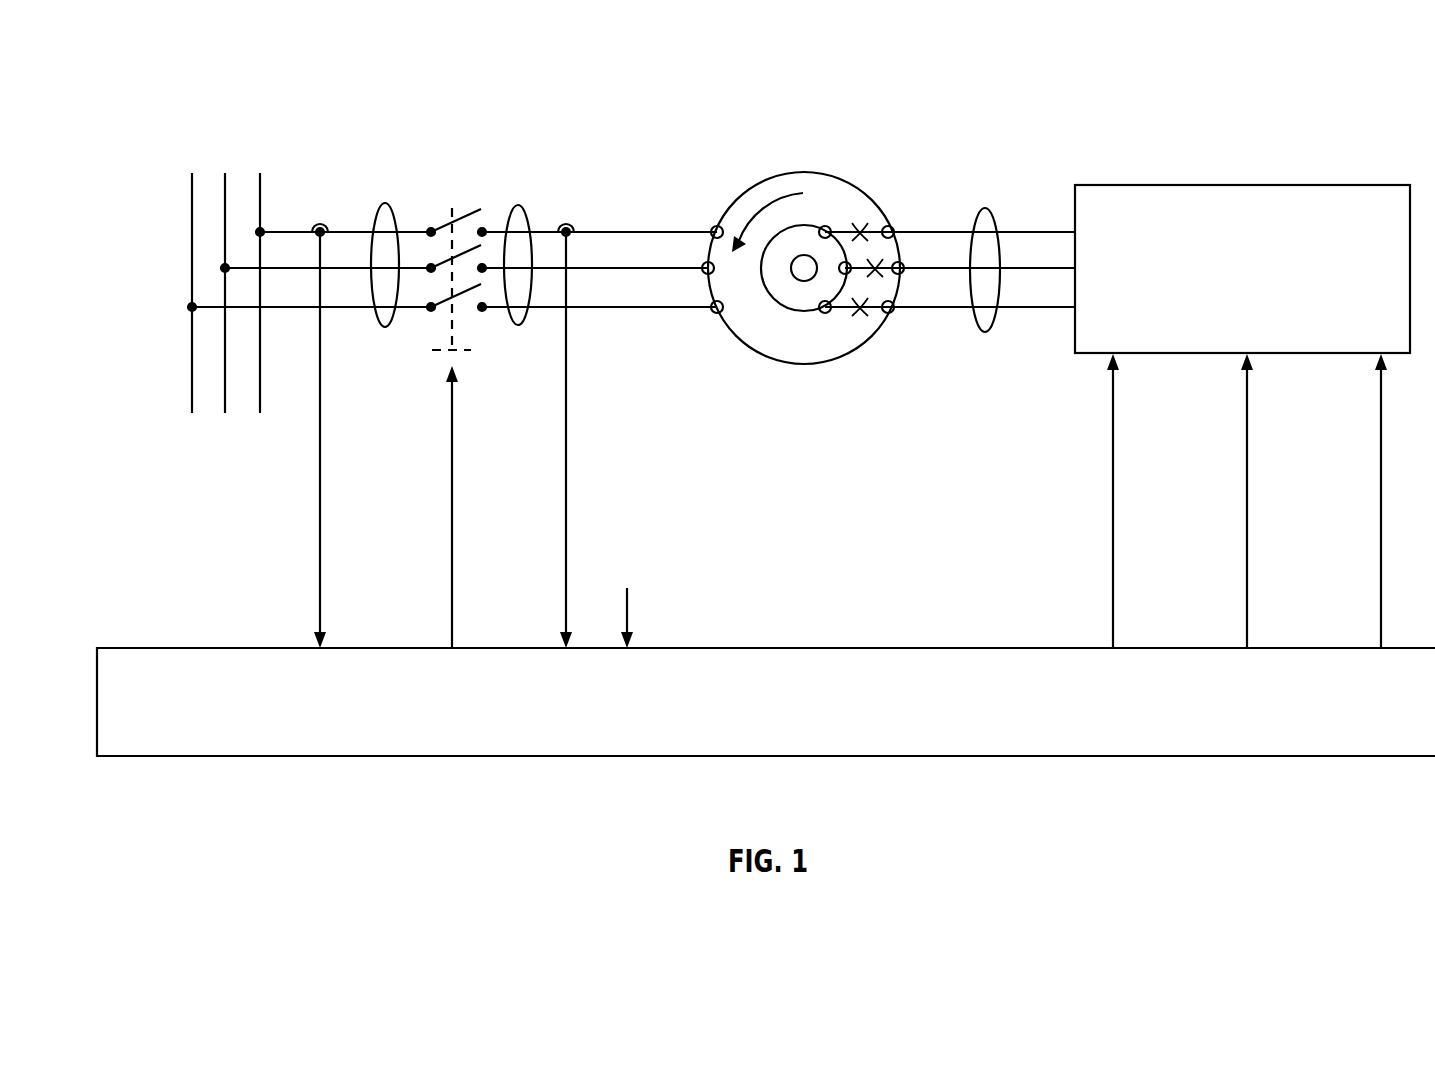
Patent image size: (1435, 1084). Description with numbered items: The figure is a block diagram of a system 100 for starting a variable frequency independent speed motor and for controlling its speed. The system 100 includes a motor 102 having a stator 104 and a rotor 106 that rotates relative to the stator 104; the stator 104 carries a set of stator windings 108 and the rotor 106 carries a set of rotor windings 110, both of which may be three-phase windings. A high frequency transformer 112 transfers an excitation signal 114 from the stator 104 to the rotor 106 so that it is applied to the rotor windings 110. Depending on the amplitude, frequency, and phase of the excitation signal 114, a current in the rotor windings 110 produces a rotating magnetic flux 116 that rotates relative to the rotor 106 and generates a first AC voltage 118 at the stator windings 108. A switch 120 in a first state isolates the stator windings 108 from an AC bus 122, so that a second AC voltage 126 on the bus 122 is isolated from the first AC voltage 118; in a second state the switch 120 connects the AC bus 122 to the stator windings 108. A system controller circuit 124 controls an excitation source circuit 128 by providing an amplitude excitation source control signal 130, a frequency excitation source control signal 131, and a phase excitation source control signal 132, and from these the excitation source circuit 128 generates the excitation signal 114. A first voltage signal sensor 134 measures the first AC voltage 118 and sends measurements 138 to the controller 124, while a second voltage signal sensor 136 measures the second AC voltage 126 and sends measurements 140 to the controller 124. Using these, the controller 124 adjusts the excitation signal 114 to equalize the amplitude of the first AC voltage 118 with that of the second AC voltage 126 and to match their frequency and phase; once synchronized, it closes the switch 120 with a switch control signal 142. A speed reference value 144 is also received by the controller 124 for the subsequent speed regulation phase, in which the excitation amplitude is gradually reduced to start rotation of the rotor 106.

The system 100 is at (222, 54).
The motor 102 is at (907, 102).
The stator 104 is at (726, 206).
The rotor 106 is at (810, 226).
The set of stator windings 108 is at (714, 237).
The set of rotor windings 110 is at (822, 233).
The high frequency transformer 112 is at (873, 317).
The excitation signal 114 is at (985, 210).
The rotating magnetic flux 116 is at (778, 196).
The first AC voltage 118 is at (518, 206).
The switch 120 is at (430, 230).
The AC bus 122 is at (192, 200).
The system controller circuit 124 is at (163, 647).
The second AC voltage 126 is at (385, 203).
The excitation source circuit 128 is at (1278, 185).
The amplitude excitation source control signal 130 is at (1111, 512).
The frequency excitation source control signal 131 is at (1245, 512).
The phase excitation source control signal 132 is at (1379, 512).
The first voltage signal sensor 134 is at (564, 236).
The second voltage signal sensor 136 is at (322, 236).
The measurements 138 is at (564, 512).
The measurements 140 is at (318, 494).
The switch control signal 142 is at (450, 512).
The speed reference value 144 is at (628, 606).